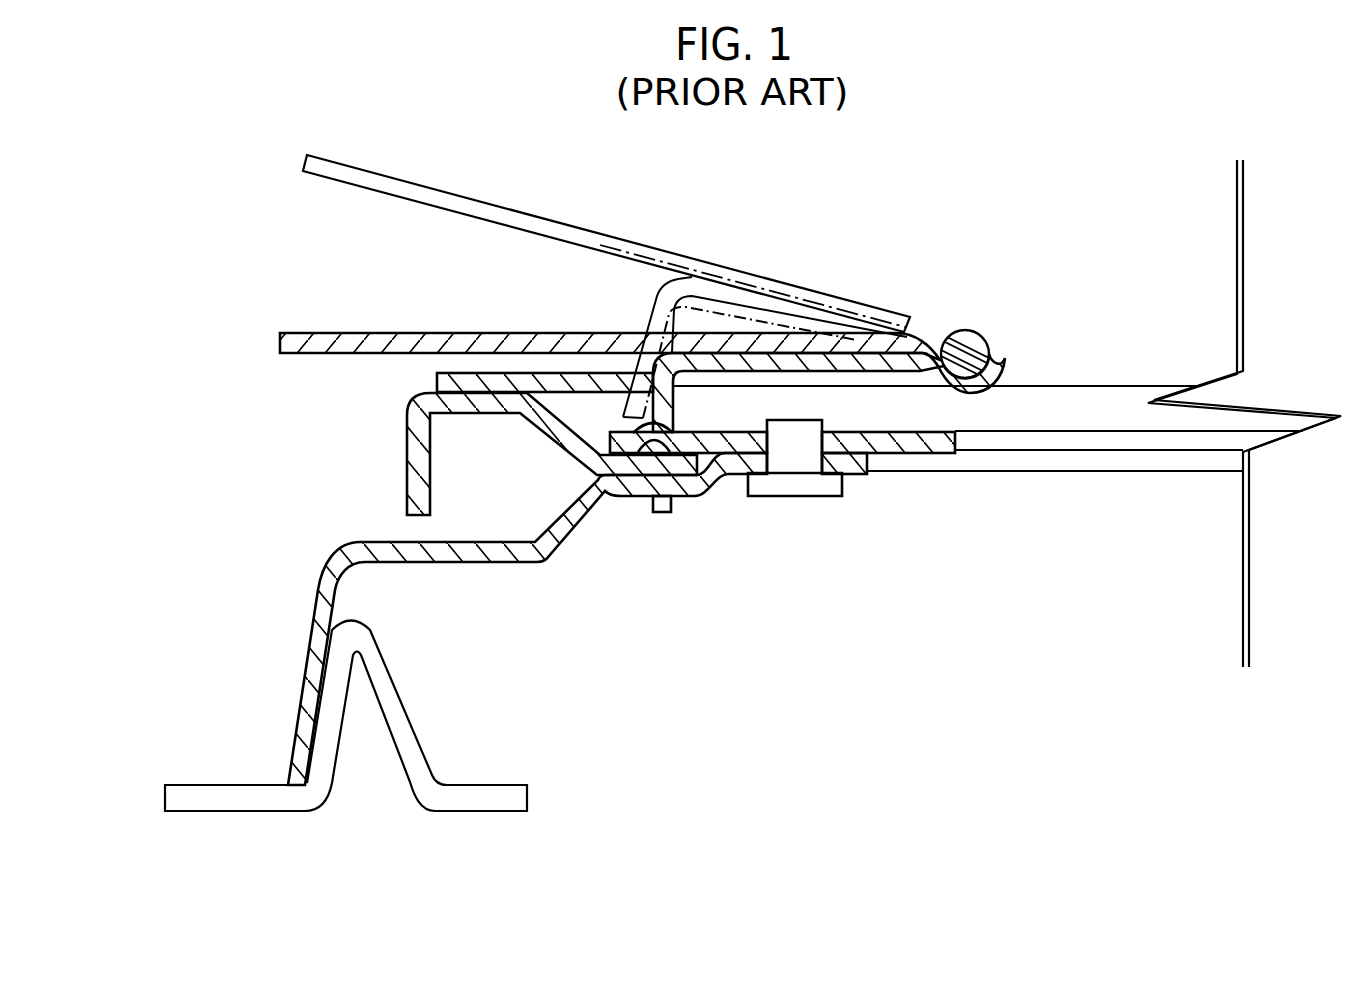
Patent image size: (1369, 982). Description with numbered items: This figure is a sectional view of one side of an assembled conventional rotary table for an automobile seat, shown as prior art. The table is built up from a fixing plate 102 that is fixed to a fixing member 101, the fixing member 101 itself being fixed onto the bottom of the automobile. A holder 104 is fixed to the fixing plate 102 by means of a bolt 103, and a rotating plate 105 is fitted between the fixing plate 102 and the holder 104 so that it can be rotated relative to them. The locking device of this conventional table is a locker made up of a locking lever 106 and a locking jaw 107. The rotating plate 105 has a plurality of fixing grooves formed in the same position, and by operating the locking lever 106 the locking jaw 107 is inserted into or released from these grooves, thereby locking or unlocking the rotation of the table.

The fixing member 101 is at (410, 742).
The fixing plate 102 is at (327, 592).
The bolt 103 is at (800, 484).
The holder 104 is at (922, 440).
The rotating plate 105 is at (416, 445).
The locking lever 106 is at (308, 343).
The locking jaw 107 is at (664, 385).